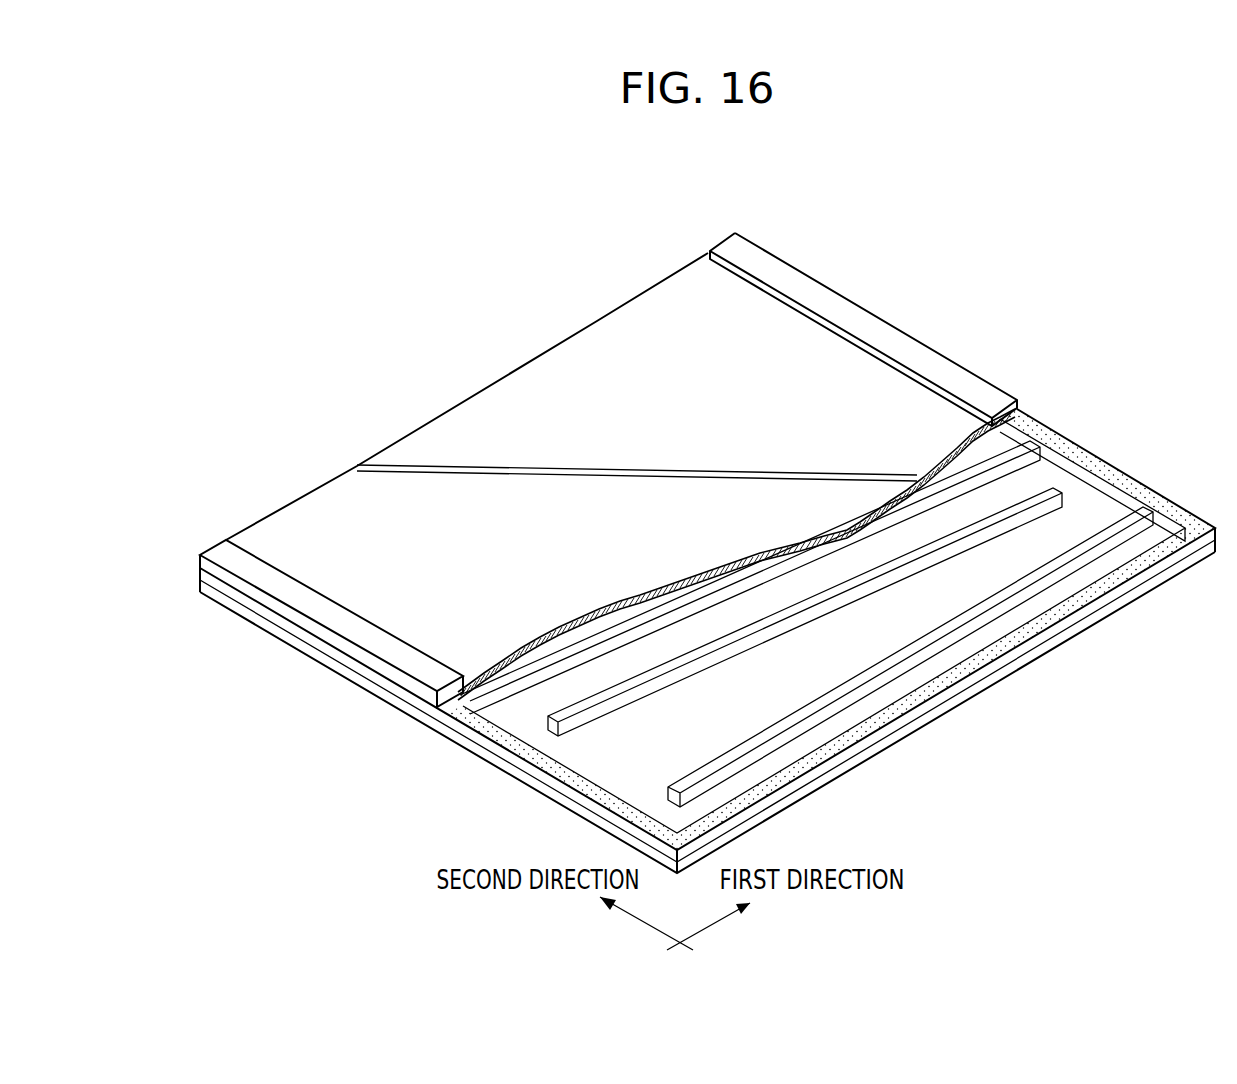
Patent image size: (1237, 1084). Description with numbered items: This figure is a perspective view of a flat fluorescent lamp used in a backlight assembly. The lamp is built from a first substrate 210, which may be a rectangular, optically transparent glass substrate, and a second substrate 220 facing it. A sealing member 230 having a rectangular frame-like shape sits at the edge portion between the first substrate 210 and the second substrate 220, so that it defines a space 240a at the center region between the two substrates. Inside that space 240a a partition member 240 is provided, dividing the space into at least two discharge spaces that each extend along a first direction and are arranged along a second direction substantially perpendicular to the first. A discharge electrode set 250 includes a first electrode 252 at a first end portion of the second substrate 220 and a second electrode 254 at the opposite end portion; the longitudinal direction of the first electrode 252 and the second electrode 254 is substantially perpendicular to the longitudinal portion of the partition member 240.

The first substrate 210 is at (570, 756).
The second substrate 220 is at (767, 318).
The sealing member 230 is at (498, 735).
The partition member 240 is at (804, 702).
The space 240a is at (1000, 505).
The discharge electrode set 250 is at (370, 386).
The first electrode 252 is at (224, 550).
The second electrode 254 is at (717, 242).